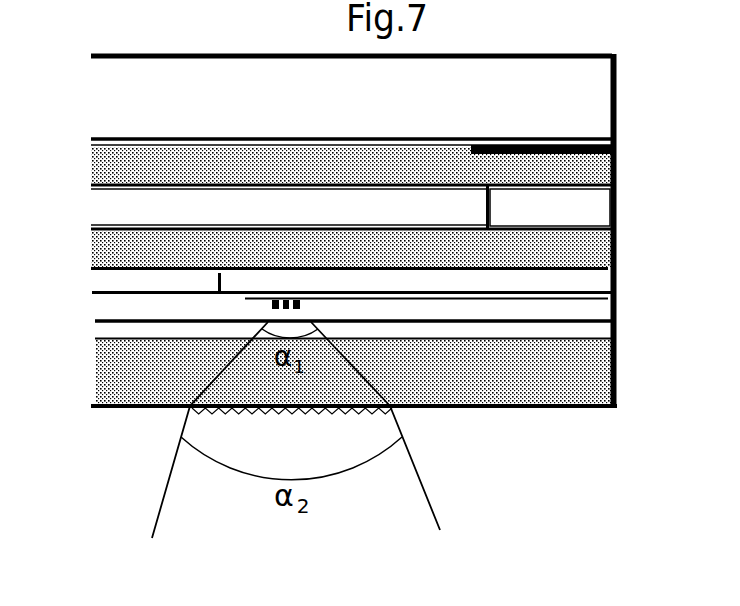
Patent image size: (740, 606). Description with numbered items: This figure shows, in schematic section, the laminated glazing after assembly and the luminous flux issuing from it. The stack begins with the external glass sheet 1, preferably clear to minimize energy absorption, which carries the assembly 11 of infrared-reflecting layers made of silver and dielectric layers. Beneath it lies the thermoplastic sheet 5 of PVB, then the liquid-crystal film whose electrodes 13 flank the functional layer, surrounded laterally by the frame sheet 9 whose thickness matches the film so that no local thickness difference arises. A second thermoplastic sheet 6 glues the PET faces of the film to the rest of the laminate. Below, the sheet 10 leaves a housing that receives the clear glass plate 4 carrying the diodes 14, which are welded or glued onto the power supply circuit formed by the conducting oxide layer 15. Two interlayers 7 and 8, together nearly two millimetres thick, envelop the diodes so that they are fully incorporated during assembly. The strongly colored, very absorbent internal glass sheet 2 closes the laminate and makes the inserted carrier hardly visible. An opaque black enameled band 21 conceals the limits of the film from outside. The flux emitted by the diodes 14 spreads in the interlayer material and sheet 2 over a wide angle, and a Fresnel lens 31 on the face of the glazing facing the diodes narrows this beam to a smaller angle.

The external glass sheet 1 is at (396, 114).
The internal glass sheet 2 is at (413, 386).
The clear glass plate 4 is at (600, 283).
The sheet of thermoplastic material 5 is at (401, 178).
The sheet of thermoplastic material 6 is at (422, 260).
The interlayer 7 is at (115, 304).
The interlayer 8 is at (95, 328).
The frame sheet 9 is at (546, 220).
The sheet 10 is at (112, 281).
The assembly of infrared-reflecting layers 11 is at (92, 138).
The electrodes 13 is at (324, 207).
The diodes 14 is at (300, 307).
The conducting oxide layer 15 is at (595, 301).
The opaque black enameled band 21 is at (614, 149).
The Fresnel lens 31 is at (345, 408).